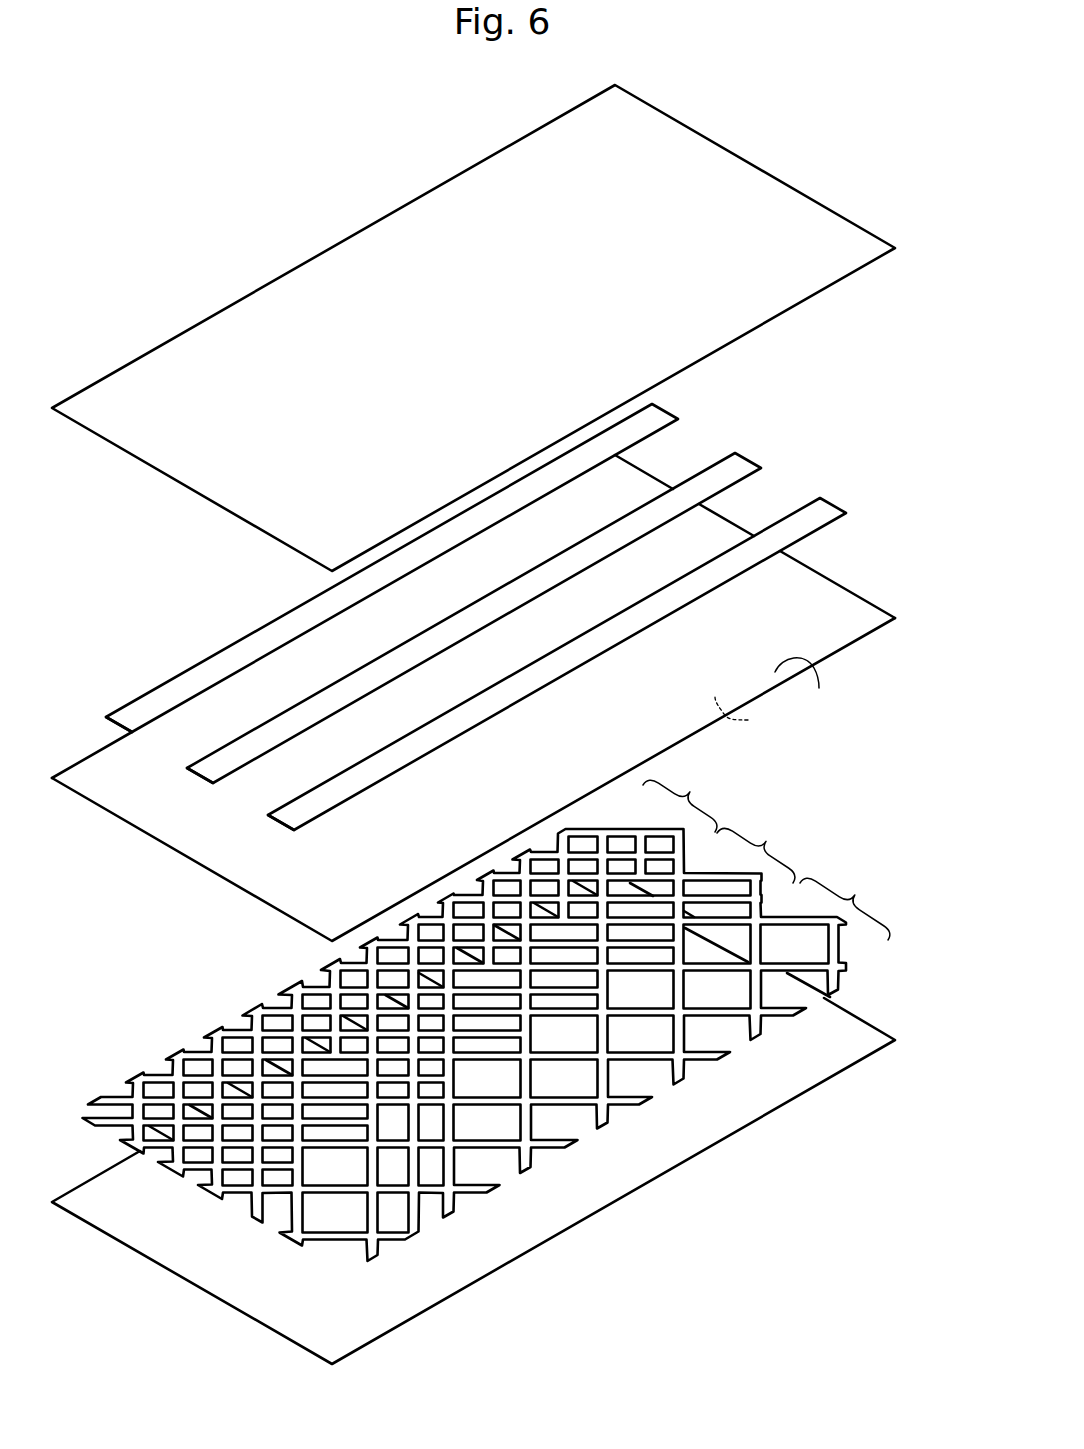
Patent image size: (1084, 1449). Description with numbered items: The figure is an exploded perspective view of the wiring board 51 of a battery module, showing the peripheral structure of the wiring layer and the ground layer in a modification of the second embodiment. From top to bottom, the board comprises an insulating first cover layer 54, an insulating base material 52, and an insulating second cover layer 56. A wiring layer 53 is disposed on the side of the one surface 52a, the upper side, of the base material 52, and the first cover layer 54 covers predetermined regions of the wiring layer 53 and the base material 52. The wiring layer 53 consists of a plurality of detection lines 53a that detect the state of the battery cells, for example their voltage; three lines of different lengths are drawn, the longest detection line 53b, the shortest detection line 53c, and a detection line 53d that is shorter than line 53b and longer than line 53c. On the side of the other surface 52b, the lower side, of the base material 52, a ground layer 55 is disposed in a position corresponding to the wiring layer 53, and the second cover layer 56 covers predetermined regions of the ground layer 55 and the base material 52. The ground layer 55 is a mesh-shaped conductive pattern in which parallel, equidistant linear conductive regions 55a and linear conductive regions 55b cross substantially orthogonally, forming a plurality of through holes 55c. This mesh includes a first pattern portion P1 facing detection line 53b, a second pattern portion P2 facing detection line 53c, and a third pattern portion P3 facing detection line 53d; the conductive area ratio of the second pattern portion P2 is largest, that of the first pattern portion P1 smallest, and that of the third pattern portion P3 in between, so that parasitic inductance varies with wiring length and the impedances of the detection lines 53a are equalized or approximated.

The wiring board 51 is at (833, 160).
The first cover layer 54 is at (862, 233).
The base material 52 is at (869, 603).
The one surface 52a is at (810, 685).
The other surface 52b is at (755, 714).
The wiring layer 53 is at (486, 635).
The detection lines 53a is at (176, 698).
The detection line 53b is at (826, 517).
The detection line 53c is at (656, 417).
The detection line 53d is at (738, 460).
The ground layer 55 is at (838, 972).
The linear conductive regions 55a is at (482, 1188).
The linear conductive regions 55b is at (218, 1172).
The through holes 55c is at (258, 1177).
The second cover layer 56 is at (864, 1022).
The first pattern portion P1 is at (845, 900).
The second pattern portion P2 is at (680, 794).
The third pattern portion P3 is at (756, 844).